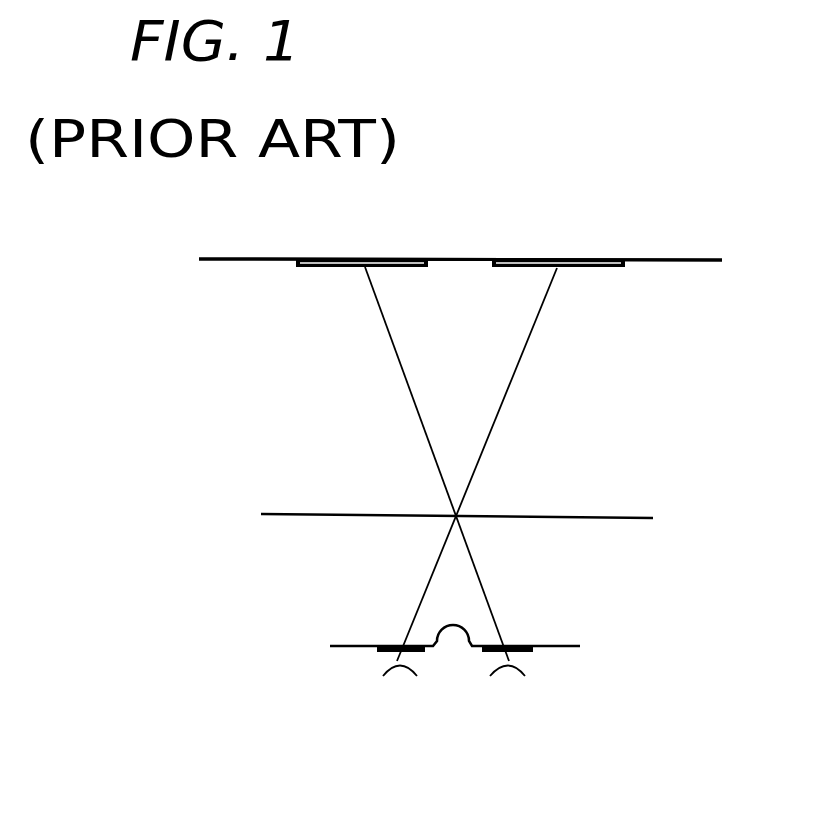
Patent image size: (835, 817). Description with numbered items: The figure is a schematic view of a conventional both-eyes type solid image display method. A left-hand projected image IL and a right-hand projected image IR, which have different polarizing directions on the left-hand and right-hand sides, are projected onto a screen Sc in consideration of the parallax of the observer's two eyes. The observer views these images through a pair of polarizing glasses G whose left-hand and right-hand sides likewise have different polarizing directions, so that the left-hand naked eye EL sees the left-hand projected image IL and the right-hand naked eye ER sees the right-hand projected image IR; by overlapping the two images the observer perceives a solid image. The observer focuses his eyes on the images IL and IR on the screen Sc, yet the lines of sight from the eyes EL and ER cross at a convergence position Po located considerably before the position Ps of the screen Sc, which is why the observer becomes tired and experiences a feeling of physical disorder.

The screen Sc is at (675, 258).
The position of the screen Ps is at (479, 263).
The right-hand projected image IR is at (322, 268).
The left-hand projected image IL is at (595, 270).
The convergence position Po is at (476, 520).
The polarizing glasses G is at (546, 645).
The left-hand naked eye EL is at (398, 678).
The right-hand naked eye ER is at (510, 678).